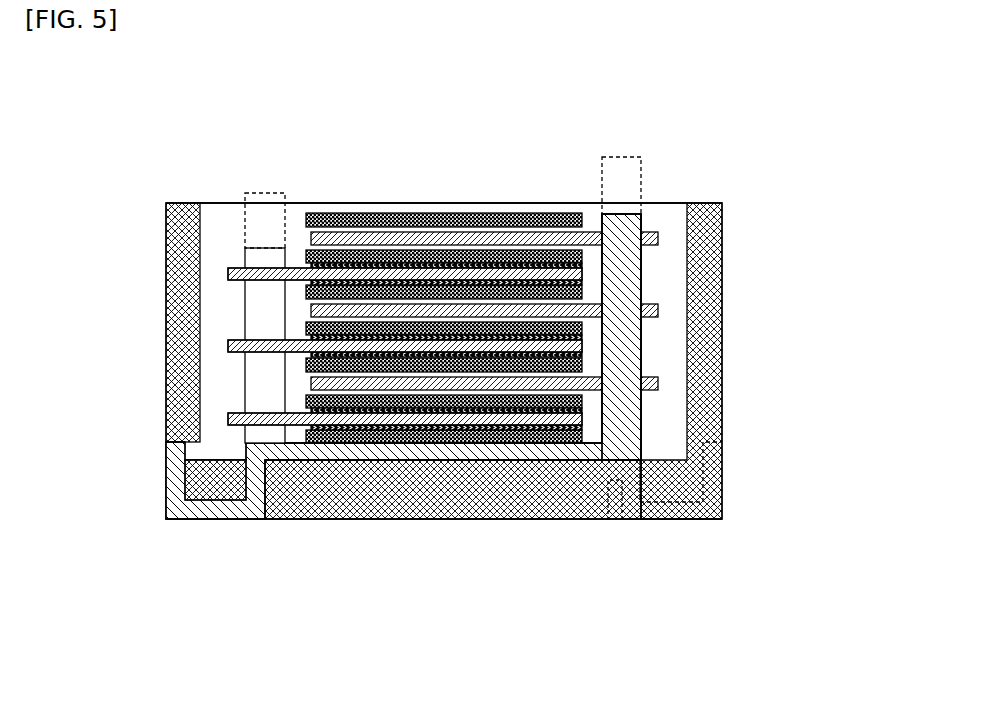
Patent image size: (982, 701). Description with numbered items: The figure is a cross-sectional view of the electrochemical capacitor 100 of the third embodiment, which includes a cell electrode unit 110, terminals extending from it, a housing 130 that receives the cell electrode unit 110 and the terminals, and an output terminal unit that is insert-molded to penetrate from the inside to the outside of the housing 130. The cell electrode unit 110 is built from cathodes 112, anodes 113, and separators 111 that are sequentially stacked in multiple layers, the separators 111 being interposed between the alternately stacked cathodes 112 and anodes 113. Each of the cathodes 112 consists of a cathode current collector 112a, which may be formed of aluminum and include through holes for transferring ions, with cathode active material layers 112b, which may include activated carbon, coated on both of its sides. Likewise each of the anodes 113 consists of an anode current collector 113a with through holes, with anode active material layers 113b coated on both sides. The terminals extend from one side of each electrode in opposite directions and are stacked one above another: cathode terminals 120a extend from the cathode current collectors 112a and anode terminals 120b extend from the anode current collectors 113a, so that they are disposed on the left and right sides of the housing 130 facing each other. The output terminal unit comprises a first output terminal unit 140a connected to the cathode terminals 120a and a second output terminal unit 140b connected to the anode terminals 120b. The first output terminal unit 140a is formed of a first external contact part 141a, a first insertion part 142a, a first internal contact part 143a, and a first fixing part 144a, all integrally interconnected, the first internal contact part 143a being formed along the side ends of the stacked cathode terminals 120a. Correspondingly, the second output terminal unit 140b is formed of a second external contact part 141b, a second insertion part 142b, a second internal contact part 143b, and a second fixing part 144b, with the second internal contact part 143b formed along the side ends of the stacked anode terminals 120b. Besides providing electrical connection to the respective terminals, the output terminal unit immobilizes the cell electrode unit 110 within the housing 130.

The electrochemical capacitor 100 is at (77, 76).
The cell electrode unit 110 is at (535, 198).
The separators 111 is at (492, 214).
The cathodes 112 is at (443, 534).
The cathode current collectors 112a is at (374, 445).
The cathode active material layers 112b is at (448, 446).
The anodes 113 is at (444, 250).
The anode current collectors 113a is at (343, 228).
The anode active material layers 113b is at (413, 225).
The cathode terminals 120a is at (262, 280).
The anode terminals 120b is at (654, 244).
The housing 130 is at (518, 498).
The first output terminal unit 140a is at (730, 524).
The second output terminal unit 140b is at (158, 524).
The first external contact part 141a is at (665, 521).
The second external contact part 141b is at (219, 510).
The first insertion part 142a is at (608, 521).
The second insertion part 142b is at (266, 477).
The first internal contact part 143a is at (260, 377).
The second internal contact part 143b is at (637, 343).
The first fixing part 144a is at (264, 258).
The second fixing part 144b is at (628, 222).